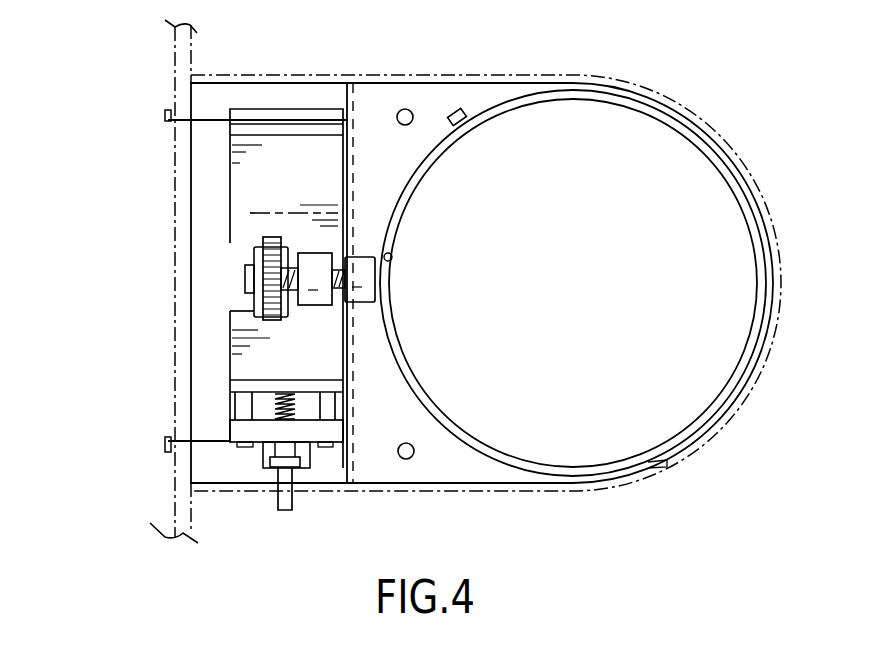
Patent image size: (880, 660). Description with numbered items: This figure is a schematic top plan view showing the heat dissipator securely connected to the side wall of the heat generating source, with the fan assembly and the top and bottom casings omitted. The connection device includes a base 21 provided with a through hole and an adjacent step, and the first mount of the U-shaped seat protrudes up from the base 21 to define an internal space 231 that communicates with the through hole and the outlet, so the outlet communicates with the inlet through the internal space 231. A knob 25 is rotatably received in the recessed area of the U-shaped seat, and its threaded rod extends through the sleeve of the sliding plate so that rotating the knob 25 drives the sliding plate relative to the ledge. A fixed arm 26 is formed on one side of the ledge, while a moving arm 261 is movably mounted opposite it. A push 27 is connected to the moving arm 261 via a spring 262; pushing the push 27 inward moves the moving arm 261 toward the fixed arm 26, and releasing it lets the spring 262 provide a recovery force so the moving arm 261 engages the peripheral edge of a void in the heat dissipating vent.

The base 21 is at (440, 92).
The internal space 231 is at (373, 93).
The knob 25 is at (272, 237).
The fixed arm 26 is at (165, 113).
The moving arm 261 is at (165, 443).
The spring 262 is at (273, 408).
The push 27 is at (285, 503).